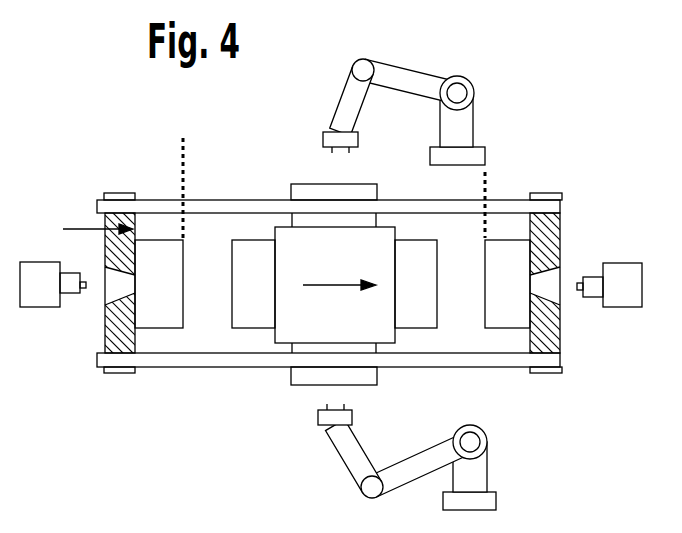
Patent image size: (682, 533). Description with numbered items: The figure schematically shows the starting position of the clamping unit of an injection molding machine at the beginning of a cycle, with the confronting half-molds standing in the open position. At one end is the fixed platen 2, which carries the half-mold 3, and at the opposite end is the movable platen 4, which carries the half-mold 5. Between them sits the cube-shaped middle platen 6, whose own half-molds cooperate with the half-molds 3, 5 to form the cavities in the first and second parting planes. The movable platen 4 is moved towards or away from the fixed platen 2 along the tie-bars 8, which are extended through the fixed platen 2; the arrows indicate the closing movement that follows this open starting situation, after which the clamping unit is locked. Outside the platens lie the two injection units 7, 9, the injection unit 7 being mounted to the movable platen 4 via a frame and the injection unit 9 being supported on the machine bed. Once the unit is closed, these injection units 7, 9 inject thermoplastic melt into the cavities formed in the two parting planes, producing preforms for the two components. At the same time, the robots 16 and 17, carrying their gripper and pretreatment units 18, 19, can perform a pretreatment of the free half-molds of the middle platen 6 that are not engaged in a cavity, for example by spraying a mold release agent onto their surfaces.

The fixed platen 2 is at (548, 352).
The half-mold 3 is at (512, 318).
The movable platen 4 is at (122, 345).
The half-mold 5 is at (148, 250).
The cube-shaped middle platen 6 is at (290, 340).
The injection unit 7 is at (44, 297).
The tie-bars 8 is at (191, 363).
The injection unit 9 is at (625, 297).
The robot 16 is at (408, 112).
The robot 17 is at (410, 457).
The gripper and pretreatment unit 18 is at (320, 136).
The gripper and pretreatment unit 19 is at (317, 416).